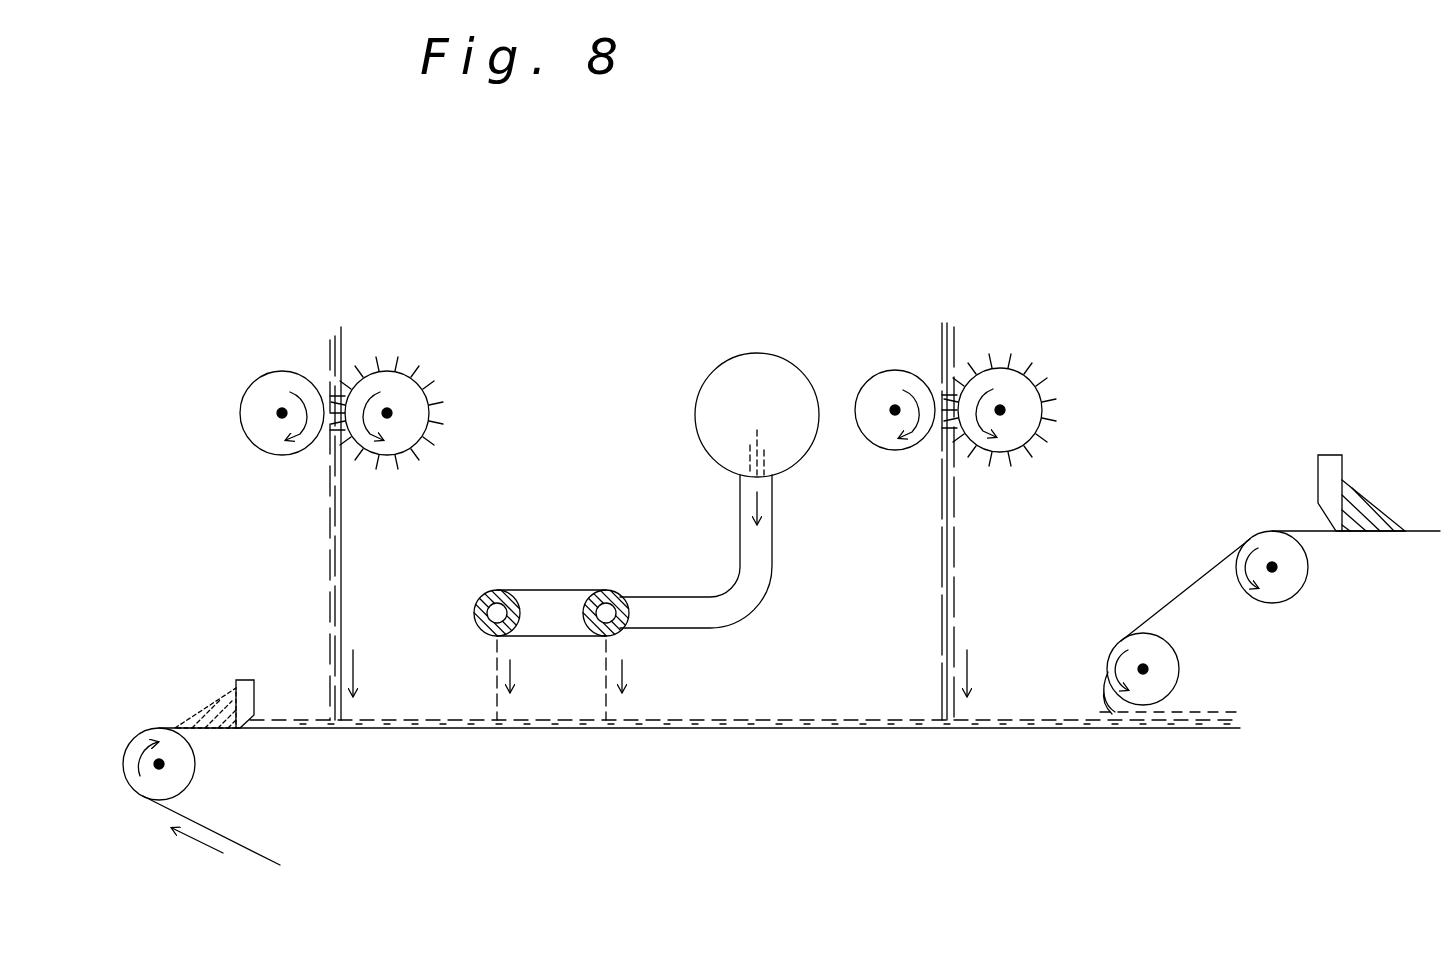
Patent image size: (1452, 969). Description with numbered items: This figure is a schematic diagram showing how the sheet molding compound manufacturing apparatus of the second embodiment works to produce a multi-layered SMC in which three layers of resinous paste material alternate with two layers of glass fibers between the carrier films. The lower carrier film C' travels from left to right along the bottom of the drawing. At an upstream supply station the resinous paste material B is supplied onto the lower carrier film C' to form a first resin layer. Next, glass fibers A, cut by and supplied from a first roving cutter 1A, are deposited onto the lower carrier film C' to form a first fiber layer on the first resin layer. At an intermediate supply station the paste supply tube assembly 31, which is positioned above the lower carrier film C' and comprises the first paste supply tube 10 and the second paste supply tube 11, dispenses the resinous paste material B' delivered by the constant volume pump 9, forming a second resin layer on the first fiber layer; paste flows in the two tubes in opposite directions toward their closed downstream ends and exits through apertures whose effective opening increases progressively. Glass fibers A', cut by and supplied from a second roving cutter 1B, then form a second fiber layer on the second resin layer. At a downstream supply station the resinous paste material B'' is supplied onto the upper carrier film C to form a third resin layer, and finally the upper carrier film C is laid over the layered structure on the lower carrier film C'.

The glass fibers A is at (296, 497).
The first roving cutter 1A is at (432, 372).
The constant volume pump 9 is at (771, 393).
The glass fibers A' is at (969, 505).
The second roving cutter 1B is at (1045, 400).
The resinous paste material B'' is at (1361, 460).
The paste supply tube assembly 31 is at (555, 606).
The first paste supply tube 10 is at (497, 596).
The second paste supply tube 11 is at (606, 596).
The upper carrier film C is at (1270, 610).
The resinous paste material B is at (214, 674).
The resinous paste material B' is at (586, 676).
The lower carrier film C' is at (681, 792).